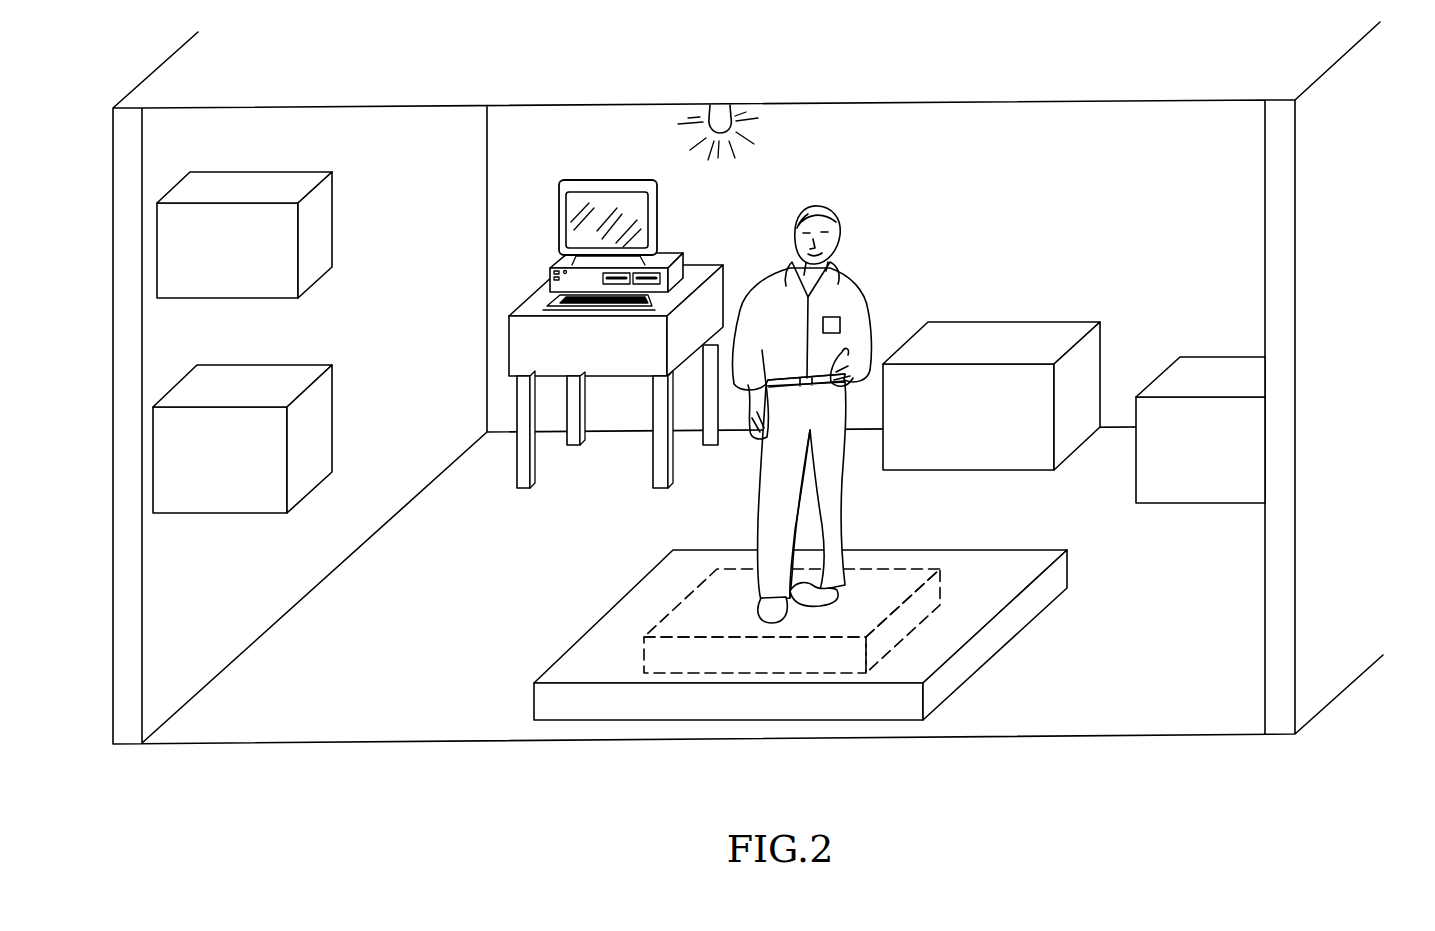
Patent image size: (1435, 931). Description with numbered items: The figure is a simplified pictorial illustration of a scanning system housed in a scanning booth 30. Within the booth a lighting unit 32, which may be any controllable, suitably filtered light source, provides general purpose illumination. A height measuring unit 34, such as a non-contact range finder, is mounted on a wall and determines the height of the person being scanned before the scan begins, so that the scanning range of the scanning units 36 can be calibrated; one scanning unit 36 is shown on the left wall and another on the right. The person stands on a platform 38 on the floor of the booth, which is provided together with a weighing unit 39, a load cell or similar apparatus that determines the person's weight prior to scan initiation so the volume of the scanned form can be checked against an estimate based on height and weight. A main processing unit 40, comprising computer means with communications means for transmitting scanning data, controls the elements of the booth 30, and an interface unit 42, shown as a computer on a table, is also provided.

The scanning booth 30 is at (1332, 235).
The lighting unit 32 is at (737, 121).
The height measuring unit 34 is at (313, 238).
The scanning unit 36 is at (313, 432).
The platform 38 is at (979, 590).
The weighing unit 39 is at (885, 589).
The main processing unit 40 is at (1019, 340).
The interface unit 42 is at (720, 240).